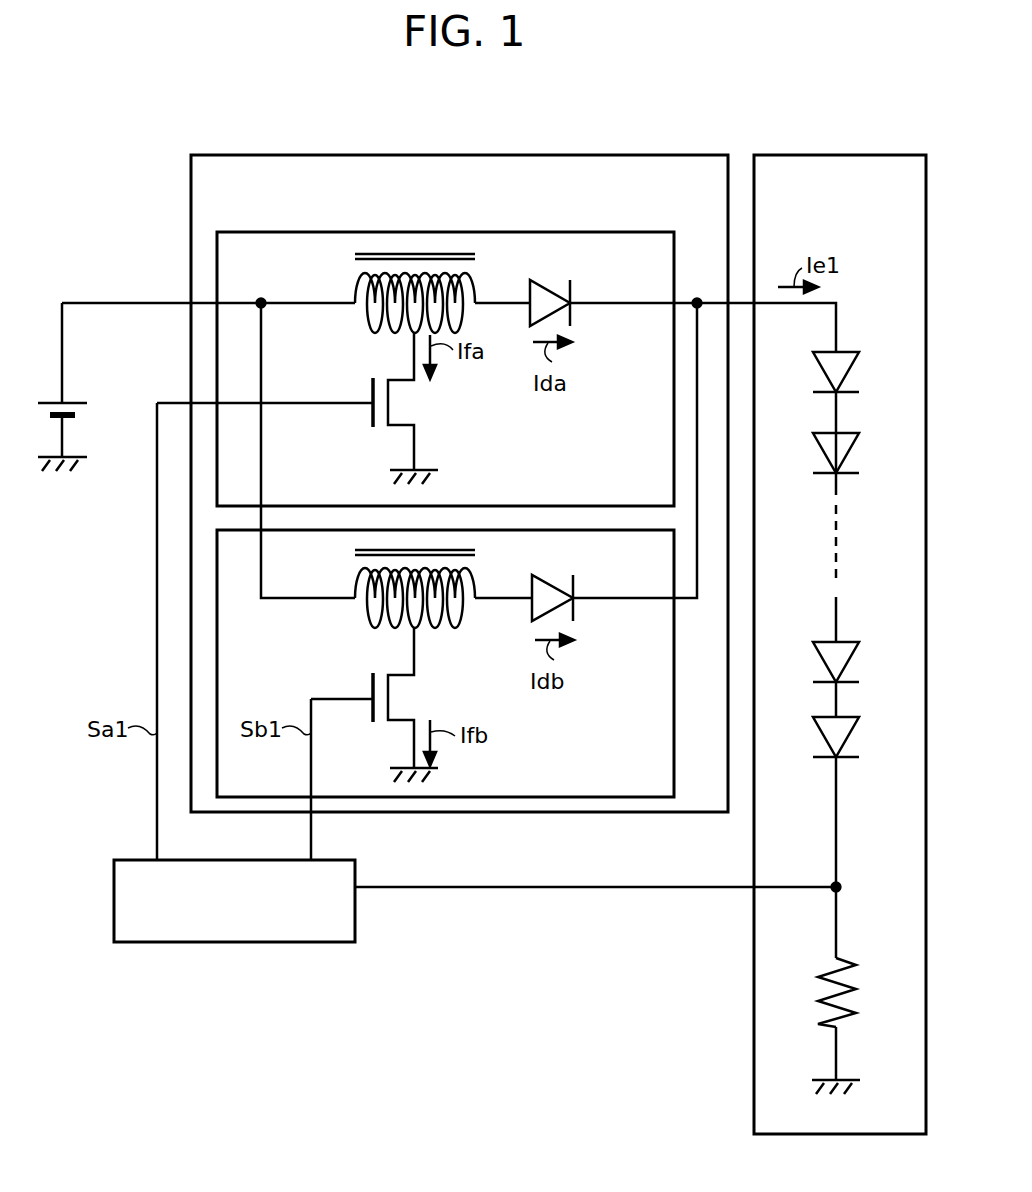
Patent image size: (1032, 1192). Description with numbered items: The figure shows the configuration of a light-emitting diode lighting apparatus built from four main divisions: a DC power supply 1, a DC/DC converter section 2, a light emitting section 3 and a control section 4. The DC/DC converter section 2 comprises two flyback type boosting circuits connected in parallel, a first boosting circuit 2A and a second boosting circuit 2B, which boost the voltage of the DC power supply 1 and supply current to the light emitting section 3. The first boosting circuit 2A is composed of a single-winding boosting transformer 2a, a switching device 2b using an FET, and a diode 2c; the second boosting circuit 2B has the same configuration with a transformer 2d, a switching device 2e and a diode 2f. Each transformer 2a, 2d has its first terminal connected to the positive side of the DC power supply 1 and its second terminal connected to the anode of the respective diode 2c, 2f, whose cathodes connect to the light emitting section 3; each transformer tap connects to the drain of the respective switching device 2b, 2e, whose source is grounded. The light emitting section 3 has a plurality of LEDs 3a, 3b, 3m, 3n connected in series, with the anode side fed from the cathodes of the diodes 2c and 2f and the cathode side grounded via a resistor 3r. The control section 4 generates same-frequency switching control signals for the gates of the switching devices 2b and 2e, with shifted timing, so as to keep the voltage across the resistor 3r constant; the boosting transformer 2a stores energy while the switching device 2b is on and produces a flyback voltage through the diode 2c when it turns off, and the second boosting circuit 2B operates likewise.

The DC power supply 1 is at (54, 400).
The DC/DC converter section 2 is at (308, 155).
The boosting circuit 2A is at (676, 276).
The boosting circuit 2B is at (676, 778).
The boosting transformer 2a is at (366, 318).
The switching device 2b is at (372, 397).
The diode 2c is at (560, 296).
The transformer 2d is at (366, 615).
The switching device 2e is at (372, 722).
The diode 2f is at (556, 590).
The light emitting section 3 is at (834, 155).
The LED 3a is at (822, 351).
The LED 3b is at (822, 432).
The LED 3m is at (822, 641).
The LED 3n is at (822, 716).
The resistor 3r is at (830, 968).
The control section 4 is at (135, 860).